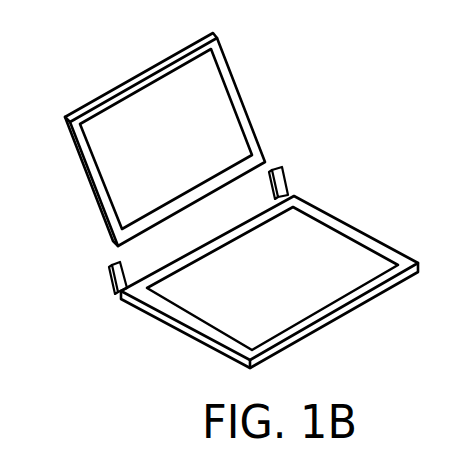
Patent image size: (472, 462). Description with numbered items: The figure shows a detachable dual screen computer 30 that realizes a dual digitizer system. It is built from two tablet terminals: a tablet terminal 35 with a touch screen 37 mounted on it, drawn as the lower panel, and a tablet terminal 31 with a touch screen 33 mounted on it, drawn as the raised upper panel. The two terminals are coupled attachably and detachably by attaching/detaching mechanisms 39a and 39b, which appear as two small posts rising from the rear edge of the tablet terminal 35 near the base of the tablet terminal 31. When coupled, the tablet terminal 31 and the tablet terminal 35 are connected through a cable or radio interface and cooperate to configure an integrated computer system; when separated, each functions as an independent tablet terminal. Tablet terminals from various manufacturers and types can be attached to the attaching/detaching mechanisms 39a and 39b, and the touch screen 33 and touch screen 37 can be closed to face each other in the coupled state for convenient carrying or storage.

The detachable dual screen computer 30 is at (294, 118).
The tablet terminal 31 is at (232, 72).
The touch screen 33 is at (147, 100).
The tablet terminal 35 is at (315, 204).
The touch screen 37 is at (358, 260).
The attaching/detaching mechanism 39a is at (110, 266).
The attaching/detaching mechanism 39b is at (286, 171).